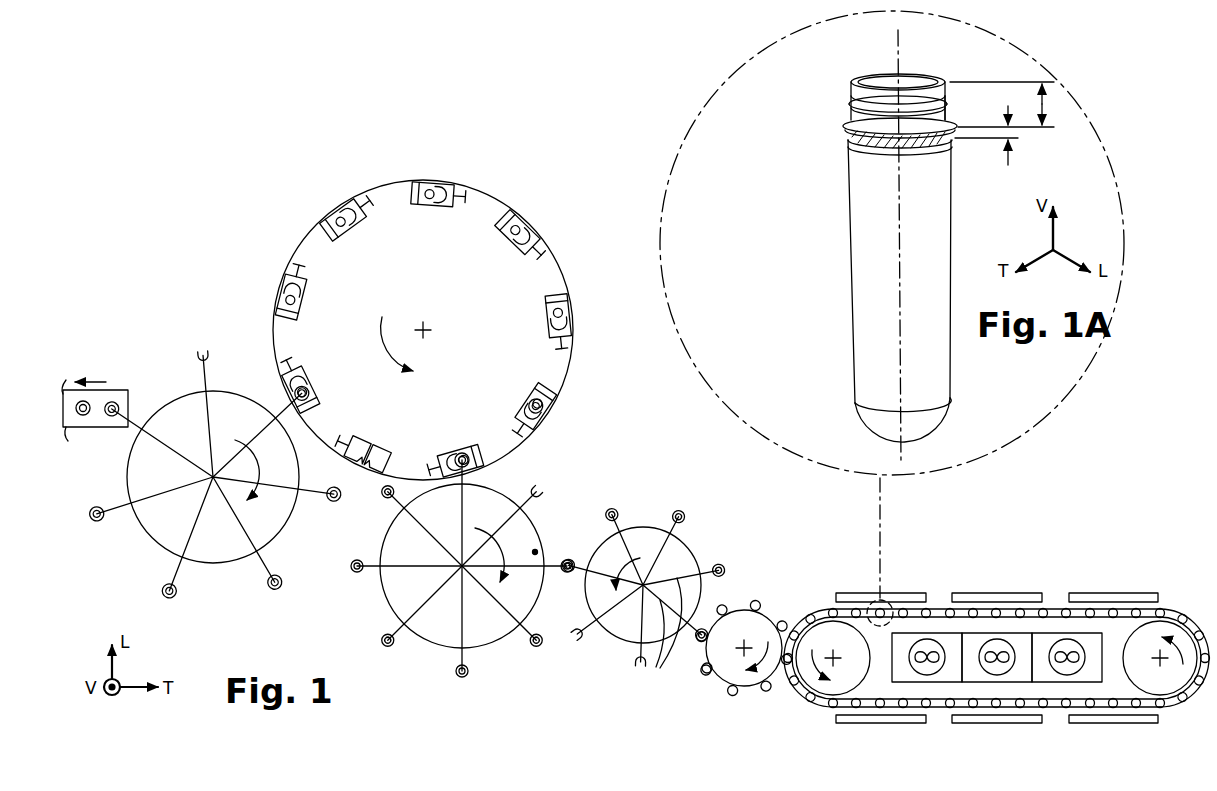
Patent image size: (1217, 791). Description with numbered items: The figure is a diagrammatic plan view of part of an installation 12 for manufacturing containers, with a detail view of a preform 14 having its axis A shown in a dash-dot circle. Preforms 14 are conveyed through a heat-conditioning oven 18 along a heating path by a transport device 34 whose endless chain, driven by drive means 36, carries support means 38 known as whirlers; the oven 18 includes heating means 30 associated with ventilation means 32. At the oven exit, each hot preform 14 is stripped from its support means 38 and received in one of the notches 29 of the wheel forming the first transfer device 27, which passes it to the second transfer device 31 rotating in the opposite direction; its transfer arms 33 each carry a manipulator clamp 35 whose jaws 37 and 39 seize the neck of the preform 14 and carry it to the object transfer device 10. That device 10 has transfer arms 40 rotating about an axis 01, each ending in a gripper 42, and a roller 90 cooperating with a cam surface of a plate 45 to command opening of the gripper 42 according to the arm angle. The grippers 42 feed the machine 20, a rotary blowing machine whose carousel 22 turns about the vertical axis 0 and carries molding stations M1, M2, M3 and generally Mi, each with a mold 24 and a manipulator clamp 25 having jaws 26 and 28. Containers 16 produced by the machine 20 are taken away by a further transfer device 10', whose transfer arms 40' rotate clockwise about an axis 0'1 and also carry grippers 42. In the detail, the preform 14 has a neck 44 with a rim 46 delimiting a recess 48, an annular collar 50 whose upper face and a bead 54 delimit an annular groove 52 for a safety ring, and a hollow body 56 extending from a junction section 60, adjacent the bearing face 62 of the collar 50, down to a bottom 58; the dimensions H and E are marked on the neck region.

In FIG. 1, the installation 12 is at (217, 268).
In FIG. 1, the machine 20 is at (394, 243).
In FIG. 1, the rotation axis 0 is at (436, 311).
In FIG. 1, the molding station Mi is at (330, 213).
In FIG. 1, the carousel 22 is at (552, 273).
In FIG. 1, the molding station M3 is at (573, 293).
In FIG. 1, the molding station M2 is at (559, 412).
In FIG. 1, the molding station M1 is at (493, 448).
In FIG. 1, the mold 24 is at (472, 448).
In FIG. 1, the manipulator clamp 25 is at (447, 458).
In FIG. 1, the jaw 26 is at (460, 453).
In FIG. 1, the jaw 28 is at (472, 475).
In FIG. 1, the preform 14 is at (541, 403).
In FIG. 1A, the preform 14 is at (834, 302).
In FIG. 1, the transfer device 10' is at (197, 478).
In FIG. 1, the transfer arms 40' is at (215, 477).
In FIG. 1, the axis 0'1 is at (173, 473).
In FIG. 1, the container 16 is at (112, 404).
In FIG. 1, the gripper 42 is at (335, 502).
In FIG. 1, the plate 45 is at (390, 582).
In FIG. 1, the object transfer device 10 is at (416, 599).
In FIG. 1, the transfer arms 40 is at (462, 567).
In FIG. 1, the axis 01 is at (458, 567).
In FIG. 1, the roller 90 is at (536, 552).
In FIG. 1, the second transfer device 31 is at (642, 548).
In FIG. 1, the jaw 37 is at (585, 625).
In FIG. 1, the jaw 39 is at (585, 636).
In FIG. 1, the transfer arms 33 is at (660, 669).
In FIG. 1, the manipulator clamp 35 is at (720, 565).
In FIG. 1, the first transfer device 27 is at (743, 626).
In FIG. 1, the notches 29 is at (782, 632).
In FIG. 1, the heat-conditioning oven 18 is at (983, 651).
In FIG. 1, the support means 38 is at (812, 704).
In FIG. 1, the drive means 36 is at (1167, 672).
In FIG. 1, the transport device 34 is at (823, 702).
In FIG. 1, the heating means 30 is at (1033, 722).
In FIG. 1, the ventilation means 32 is at (1001, 640).
In FIG. 1A, the axis A is at (895, 53).
In FIG. 1A, the recess 48 is at (909, 75).
In FIG. 1A, the rim 46 is at (848, 79).
In FIG. 1A, the neck 44 is at (846, 97).
In FIG. 1A, the annular groove 52 is at (850, 115).
In FIG. 1A, the annular collar 50 is at (851, 131).
In FIG. 1A, the bearing face 62 is at (862, 146).
In FIG. 1A, the bead 54 is at (945, 110).
In FIG. 1A, the junction section 60 is at (925, 150).
In FIG. 1A, the hollow body 56 is at (955, 242).
In FIG. 1A, the bottom 58 is at (927, 432).
In FIG. 1A, the height of neck H is at (1006, 104).
In FIG. 1A, the thickness of flange E is at (991, 135).